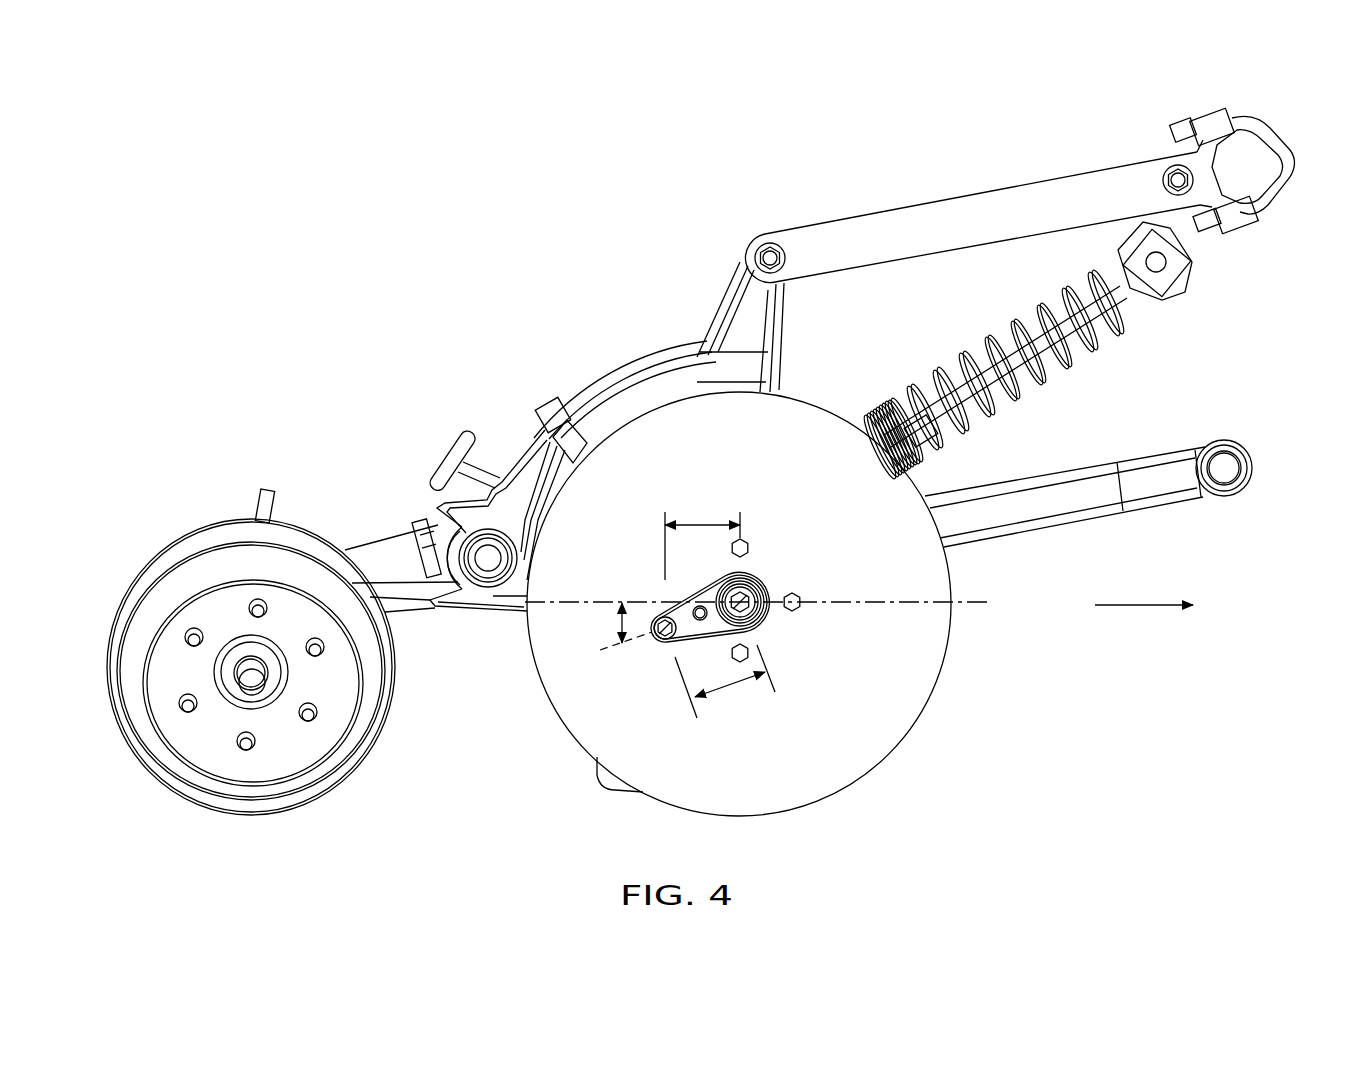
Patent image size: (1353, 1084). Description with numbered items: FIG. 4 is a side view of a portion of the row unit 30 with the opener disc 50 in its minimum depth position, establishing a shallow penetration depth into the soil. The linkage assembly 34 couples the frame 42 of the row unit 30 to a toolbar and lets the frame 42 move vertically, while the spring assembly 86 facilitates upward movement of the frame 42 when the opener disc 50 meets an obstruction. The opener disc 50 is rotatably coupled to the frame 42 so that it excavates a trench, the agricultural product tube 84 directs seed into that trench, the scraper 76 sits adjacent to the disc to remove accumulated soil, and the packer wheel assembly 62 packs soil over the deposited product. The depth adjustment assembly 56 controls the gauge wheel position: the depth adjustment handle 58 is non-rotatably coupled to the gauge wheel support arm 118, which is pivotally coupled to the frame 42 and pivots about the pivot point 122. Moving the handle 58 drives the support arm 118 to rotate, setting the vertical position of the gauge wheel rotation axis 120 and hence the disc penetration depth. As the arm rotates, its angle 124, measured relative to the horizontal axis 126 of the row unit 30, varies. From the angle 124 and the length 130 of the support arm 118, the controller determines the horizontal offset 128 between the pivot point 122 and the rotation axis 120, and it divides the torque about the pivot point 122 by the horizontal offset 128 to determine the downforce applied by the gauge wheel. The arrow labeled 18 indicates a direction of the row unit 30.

The forward direction of travel 18 is at (1143, 605).
The row unit 30 is at (569, 436).
The linkage assembly 34 is at (970, 148).
The frame 42 is at (636, 360).
The opener disc 50 is at (933, 675).
The depth adjustment assembly 56 is at (415, 443).
The depth adjustment handle 58 is at (453, 452).
The packer wheel assembly 62 is at (280, 452).
The scraper 76 is at (620, 785).
The agricultural product tube 84 is at (548, 432).
The spring assembly 86 is at (1058, 383).
The gauge wheel support arm 118 is at (676, 623).
The rotation axis 120 is at (656, 644).
The pivot point 122 is at (772, 582).
The angle 124 is at (620, 625).
The horizontal axis 126 is at (970, 604).
The horizontal offset 128 is at (710, 522).
The length 130 is at (730, 690).